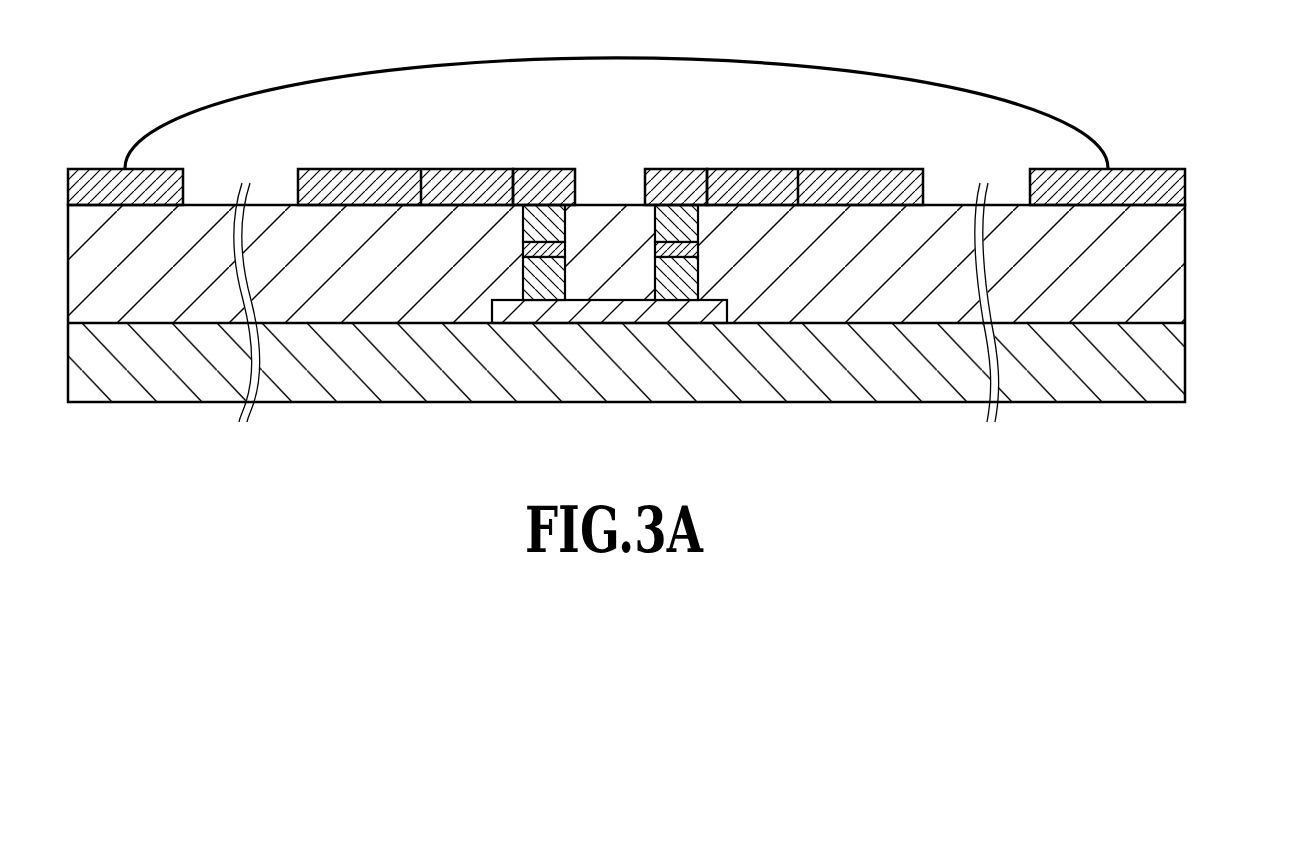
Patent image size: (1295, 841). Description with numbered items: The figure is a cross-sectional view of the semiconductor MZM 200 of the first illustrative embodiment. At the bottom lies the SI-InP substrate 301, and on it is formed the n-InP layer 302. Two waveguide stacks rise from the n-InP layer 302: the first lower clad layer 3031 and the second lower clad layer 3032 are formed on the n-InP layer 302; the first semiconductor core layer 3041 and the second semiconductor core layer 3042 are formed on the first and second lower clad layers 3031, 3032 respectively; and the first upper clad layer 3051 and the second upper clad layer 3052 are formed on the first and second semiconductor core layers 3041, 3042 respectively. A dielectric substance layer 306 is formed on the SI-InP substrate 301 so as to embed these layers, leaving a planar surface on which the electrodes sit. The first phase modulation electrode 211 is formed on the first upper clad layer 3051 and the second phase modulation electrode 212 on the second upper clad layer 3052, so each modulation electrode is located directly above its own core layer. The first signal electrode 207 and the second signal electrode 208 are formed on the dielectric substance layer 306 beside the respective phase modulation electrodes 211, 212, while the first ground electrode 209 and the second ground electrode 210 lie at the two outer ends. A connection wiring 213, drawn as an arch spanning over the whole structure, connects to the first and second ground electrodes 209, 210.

The semiconductor MZM 200 is at (669, 237).
The connection wiring 213 is at (922, 82).
The second ground electrode 210 is at (99, 176).
The second signal electrode 208 is at (362, 176).
The second phase modulation electrode 212 is at (548, 176).
The first phase modulation electrode 211 is at (683, 176).
The first signal electrode 207 is at (865, 176).
The first ground electrode 209 is at (1147, 176).
The dielectric substance layer 306 is at (1173, 268).
The SI-InP substrate 301 is at (1173, 363).
The n-InP layer 302 is at (607, 318).
The second upper clad layer 3052 is at (496, 171).
The second semiconductor core layer 3042 is at (519, 352).
The second lower clad layer 3032 is at (558, 359).
The first upper clad layer 3051 is at (720, 171).
The first semiconductor core layer 3041 is at (656, 352).
The first lower clad layer 3031 is at (696, 359).